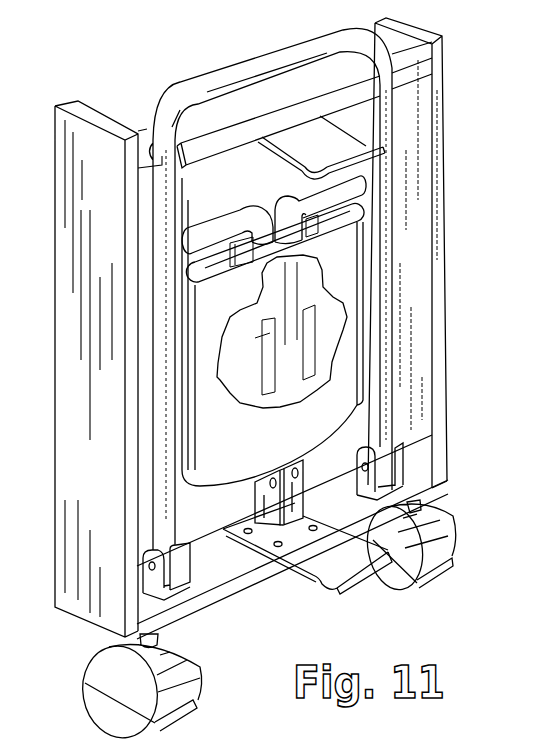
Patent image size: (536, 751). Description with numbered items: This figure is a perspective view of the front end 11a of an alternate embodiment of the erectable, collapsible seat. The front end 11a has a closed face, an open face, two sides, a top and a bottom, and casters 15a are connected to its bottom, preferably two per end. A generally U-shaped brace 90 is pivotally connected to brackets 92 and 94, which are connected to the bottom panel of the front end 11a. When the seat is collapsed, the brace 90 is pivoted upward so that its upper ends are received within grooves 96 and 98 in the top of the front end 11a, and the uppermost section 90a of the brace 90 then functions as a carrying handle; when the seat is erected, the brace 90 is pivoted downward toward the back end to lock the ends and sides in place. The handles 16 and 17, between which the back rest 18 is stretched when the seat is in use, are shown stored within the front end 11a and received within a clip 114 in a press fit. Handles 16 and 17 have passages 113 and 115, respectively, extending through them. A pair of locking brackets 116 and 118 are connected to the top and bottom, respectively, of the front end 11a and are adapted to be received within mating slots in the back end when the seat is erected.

The front end 11a is at (58, 153).
The caster 15a is at (118, 682).
The handle 16 is at (291, 199).
The handle 17 is at (234, 212).
The back rest 18 is at (348, 413).
The U-shaped brace 90 is at (382, 125).
The uppermost section of brace 90a is at (290, 55).
The bracket 92 is at (190, 562).
The bracket 94 is at (399, 447).
The groove 96 is at (156, 140).
The groove 98 is at (392, 82).
The passage 113 is at (298, 466).
The clip 114 is at (320, 348).
The passage 115 is at (272, 484).
The locking bracket 116 is at (378, 160).
The locking bracket 118 is at (312, 578).